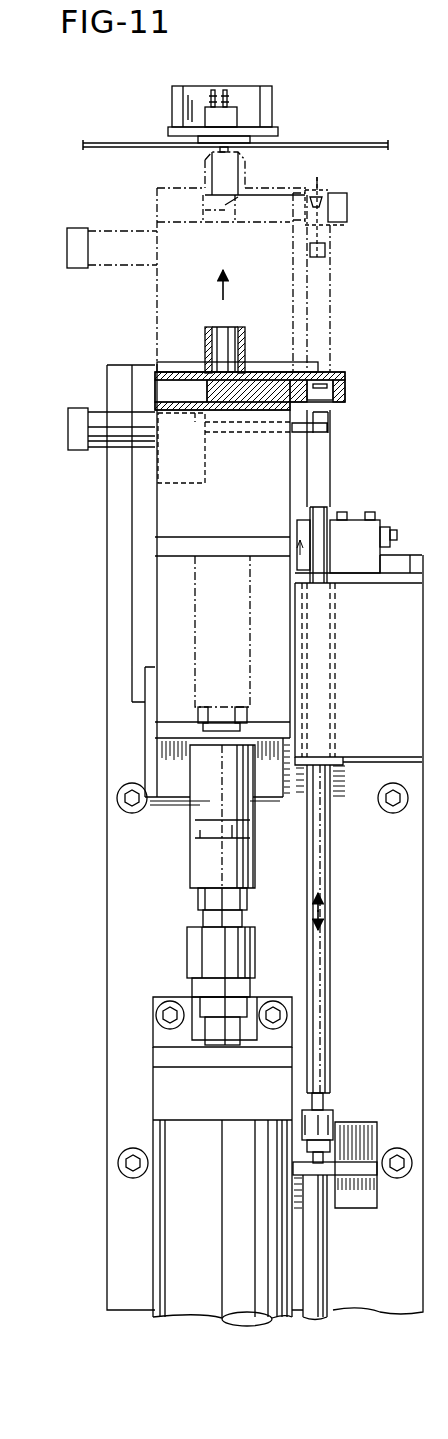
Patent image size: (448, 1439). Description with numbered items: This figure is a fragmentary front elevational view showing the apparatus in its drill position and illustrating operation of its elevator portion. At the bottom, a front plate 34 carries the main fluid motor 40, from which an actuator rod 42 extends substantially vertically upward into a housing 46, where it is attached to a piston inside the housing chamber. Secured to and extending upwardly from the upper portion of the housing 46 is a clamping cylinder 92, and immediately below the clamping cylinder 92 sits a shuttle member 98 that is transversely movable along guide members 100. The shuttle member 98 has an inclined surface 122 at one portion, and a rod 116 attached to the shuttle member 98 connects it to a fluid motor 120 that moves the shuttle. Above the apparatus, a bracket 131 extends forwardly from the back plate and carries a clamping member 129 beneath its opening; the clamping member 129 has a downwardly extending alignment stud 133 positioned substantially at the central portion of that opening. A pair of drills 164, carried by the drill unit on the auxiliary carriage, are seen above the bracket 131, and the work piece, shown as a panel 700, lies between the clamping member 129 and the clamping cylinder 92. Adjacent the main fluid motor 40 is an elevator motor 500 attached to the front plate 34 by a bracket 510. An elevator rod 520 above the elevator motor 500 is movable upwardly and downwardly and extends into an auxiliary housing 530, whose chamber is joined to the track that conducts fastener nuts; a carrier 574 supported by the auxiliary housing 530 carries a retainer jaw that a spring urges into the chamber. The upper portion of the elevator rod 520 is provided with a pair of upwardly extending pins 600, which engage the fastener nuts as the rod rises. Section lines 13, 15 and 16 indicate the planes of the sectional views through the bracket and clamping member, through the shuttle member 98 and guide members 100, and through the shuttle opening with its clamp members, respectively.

The section line 13- 13 is at (337, 121).
The section line 15- 15 is at (398, 328).
The section line 16- 16 is at (267, 410).
The front plate 34 is at (390, 1290).
The main fluid motor 40 is at (206, 1192).
The actuator rod 42 is at (250, 657).
The housing 46 is at (157, 285).
The clamping cylinder 92 is at (245, 163).
The shuttle member 98 is at (347, 207).
The guide members 100 is at (160, 373).
The rod 116 is at (230, 430).
The fluid motor 120 is at (110, 232).
The inclined surface 122 is at (220, 375).
The clamping member 129 is at (240, 128).
The bracket 131 is at (195, 118).
The alignment stud 133 is at (223, 148).
The drills 164 is at (227, 90).
The elevator motor 500 is at (327, 1237).
The bracket 510 is at (355, 1165).
The elevator rod 520 is at (330, 275).
The auxiliary housing 530 is at (386, 665).
The carrier 574 is at (357, 530).
The pins 600 is at (320, 177).
The panel 700 is at (347, 143).